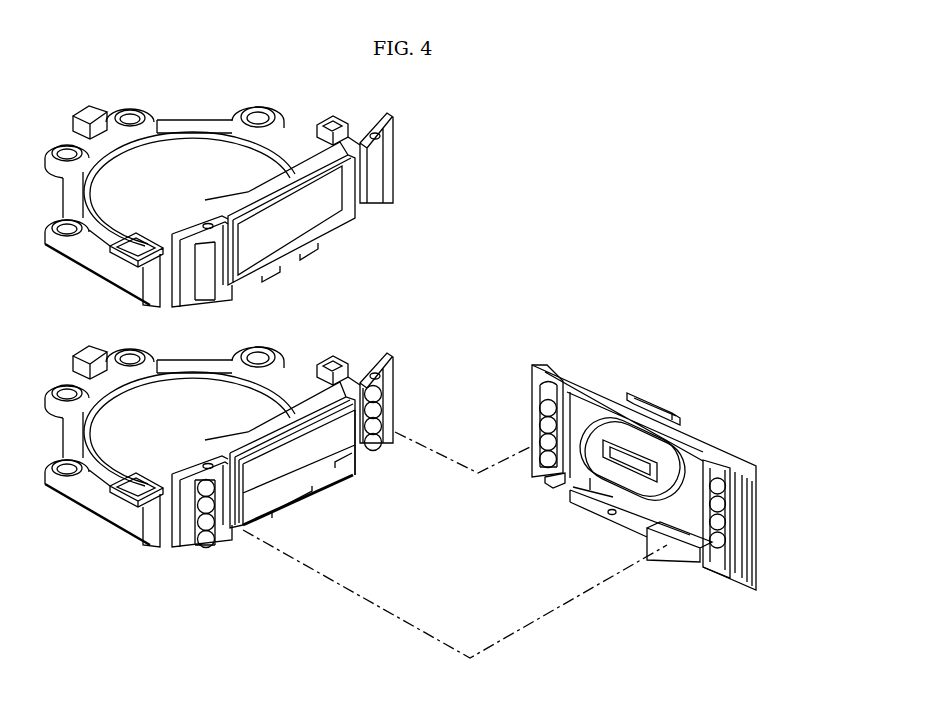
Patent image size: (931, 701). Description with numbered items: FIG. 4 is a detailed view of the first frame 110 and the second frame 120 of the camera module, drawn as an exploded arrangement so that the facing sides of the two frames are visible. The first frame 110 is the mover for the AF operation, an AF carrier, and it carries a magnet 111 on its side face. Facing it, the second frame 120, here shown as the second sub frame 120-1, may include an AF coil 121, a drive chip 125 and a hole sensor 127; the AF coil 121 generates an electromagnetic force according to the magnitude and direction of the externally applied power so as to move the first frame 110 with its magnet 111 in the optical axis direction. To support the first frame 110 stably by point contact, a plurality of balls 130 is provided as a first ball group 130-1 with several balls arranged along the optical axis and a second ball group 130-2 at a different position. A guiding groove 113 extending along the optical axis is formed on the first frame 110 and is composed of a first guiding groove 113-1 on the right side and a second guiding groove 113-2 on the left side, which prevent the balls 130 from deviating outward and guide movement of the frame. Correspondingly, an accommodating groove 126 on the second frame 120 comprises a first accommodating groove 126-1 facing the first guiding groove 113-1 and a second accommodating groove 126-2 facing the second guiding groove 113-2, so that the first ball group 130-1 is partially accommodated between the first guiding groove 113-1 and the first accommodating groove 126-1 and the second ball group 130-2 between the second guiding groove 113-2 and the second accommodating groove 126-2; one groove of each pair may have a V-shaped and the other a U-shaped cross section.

The first frame 110 is at (278, 326).
The magnet 111 is at (300, 452).
The guiding groove 113 is at (357, 210).
The first guiding groove 113-1 is at (378, 174).
The second guiding groove 113-2 is at (210, 262).
The second frame 120 is at (618, 463).
The second sub frame 120-1 is at (702, 406).
The AF coil 121 is at (543, 474).
The drive chip 125 is at (665, 548).
The accommodating groove 126 is at (592, 435).
The first accommodating groove 126-1 is at (545, 398).
The second accommodating groove 126-2 is at (713, 477).
The hole sensor 127 is at (640, 470).
The plurality of balls 130 is at (279, 472).
The first ball group 130-1 is at (384, 442).
The second ball group 130-2 is at (199, 538).